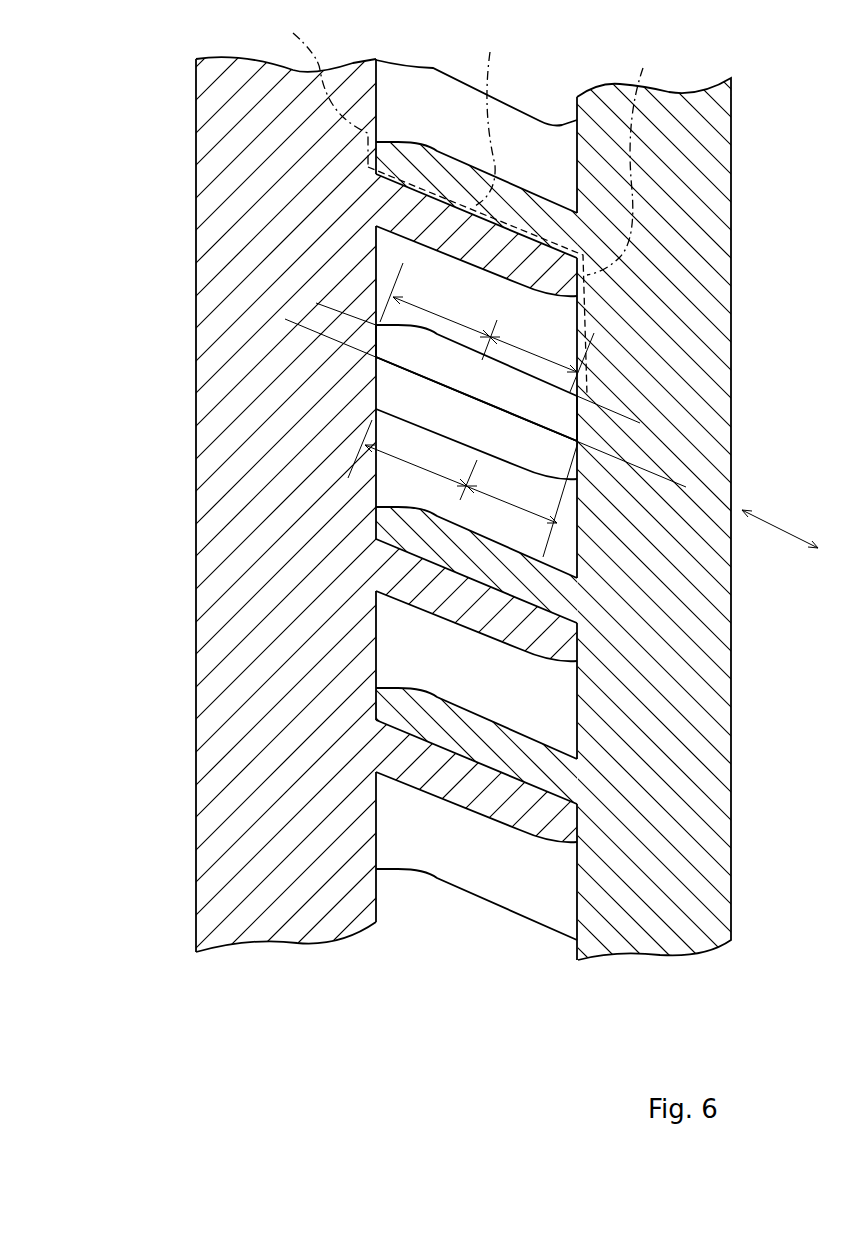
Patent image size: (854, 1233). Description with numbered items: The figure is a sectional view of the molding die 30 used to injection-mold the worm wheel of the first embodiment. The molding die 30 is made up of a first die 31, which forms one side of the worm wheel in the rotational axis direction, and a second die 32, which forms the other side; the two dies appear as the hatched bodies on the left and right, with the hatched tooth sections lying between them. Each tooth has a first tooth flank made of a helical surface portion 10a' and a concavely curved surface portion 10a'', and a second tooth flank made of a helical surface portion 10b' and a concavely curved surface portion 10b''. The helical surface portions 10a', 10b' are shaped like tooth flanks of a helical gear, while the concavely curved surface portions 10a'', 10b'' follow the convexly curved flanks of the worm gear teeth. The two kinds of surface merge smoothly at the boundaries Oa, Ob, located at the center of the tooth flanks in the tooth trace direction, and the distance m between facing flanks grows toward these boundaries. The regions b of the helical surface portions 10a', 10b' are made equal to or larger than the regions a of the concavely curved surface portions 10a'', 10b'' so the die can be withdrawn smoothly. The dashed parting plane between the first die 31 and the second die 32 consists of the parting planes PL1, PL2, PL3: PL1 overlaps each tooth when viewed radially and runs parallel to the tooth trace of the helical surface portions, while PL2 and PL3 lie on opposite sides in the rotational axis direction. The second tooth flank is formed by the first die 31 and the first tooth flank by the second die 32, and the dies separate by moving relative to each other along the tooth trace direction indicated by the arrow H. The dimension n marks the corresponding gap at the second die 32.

The molding die 30 is at (427, 518).
The first die 31 is at (292, 927).
The second die 32 is at (657, 940).
The helical surface portion 10a' is at (476, 383).
The concavely curved surface portion 10a'' is at (476, 360).
The helical surface portion 10b' is at (476, 432).
The concavely curved surface portion 10b'' is at (476, 411).
The boundary Oa is at (466, 362).
The boundary Ob is at (472, 440).
The parting plane PL1 is at (490, 115).
The parting plane PL2 is at (414, 201).
The parting plane PL3 is at (628, 158).
The distance between the tooth flanks m is at (316, 342).
The offset dimension at second wall n is at (570, 448).
The region of the concavely curved surface portion a is at (471, 398).
The region of the helical surface portion b is at (478, 411).
The arrow indicating die separation direction H is at (780, 523).